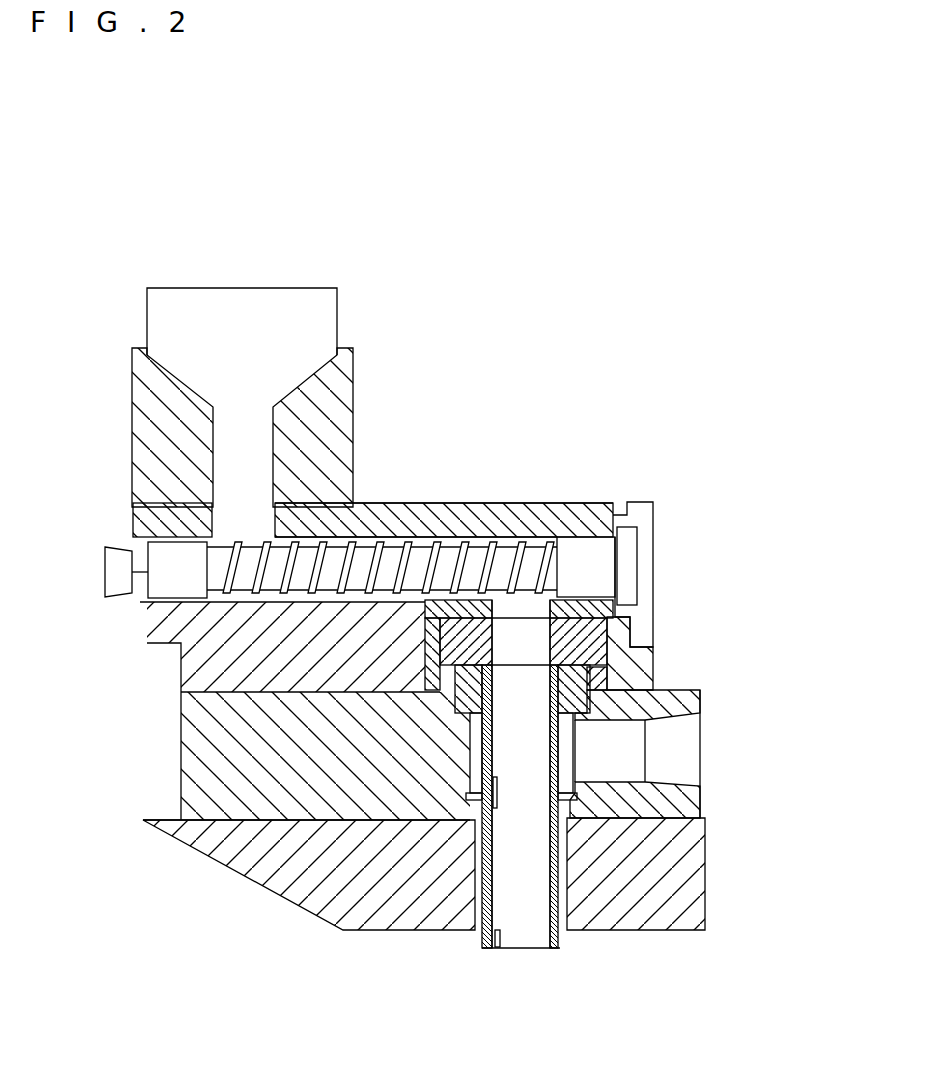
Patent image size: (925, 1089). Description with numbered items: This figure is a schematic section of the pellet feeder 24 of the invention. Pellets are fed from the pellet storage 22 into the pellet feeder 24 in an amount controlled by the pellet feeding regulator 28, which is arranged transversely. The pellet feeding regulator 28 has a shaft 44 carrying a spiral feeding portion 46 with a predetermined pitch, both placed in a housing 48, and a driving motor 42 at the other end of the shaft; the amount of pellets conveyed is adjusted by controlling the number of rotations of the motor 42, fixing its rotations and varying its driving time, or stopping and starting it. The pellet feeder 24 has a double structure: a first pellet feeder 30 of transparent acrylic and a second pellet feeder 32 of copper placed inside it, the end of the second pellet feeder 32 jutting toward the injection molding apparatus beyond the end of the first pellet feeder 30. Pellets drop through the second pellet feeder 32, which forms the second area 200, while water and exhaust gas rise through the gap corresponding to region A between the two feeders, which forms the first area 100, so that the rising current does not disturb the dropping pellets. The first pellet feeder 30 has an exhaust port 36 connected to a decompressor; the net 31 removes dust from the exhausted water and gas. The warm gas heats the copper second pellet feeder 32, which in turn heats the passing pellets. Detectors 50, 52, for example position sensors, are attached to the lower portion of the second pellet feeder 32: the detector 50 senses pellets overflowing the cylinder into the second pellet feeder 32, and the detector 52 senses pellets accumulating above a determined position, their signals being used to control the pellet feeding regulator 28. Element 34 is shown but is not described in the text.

The pellet storage 22 is at (362, 352).
The pellet feeding regulator 28 is at (494, 522).
The shaft 44 is at (440, 517).
The spiral feeding portion 46 is at (527, 533).
The housing 48 is at (614, 508).
The motor 42 is at (118, 597).
The pellet feeder 24 is at (670, 645).
The second pellet feeder 32 is at (650, 673).
The first pellet feeder 30 is at (583, 642).
The side block 34 is at (710, 747).
The exhaust port 36 is at (688, 768).
The region A is at (563, 920).
The net 31 is at (457, 823).
The first area 100 is at (578, 800).
The detector 50 is at (483, 933).
The detector 52 is at (505, 790).
The second area 200 is at (505, 917).